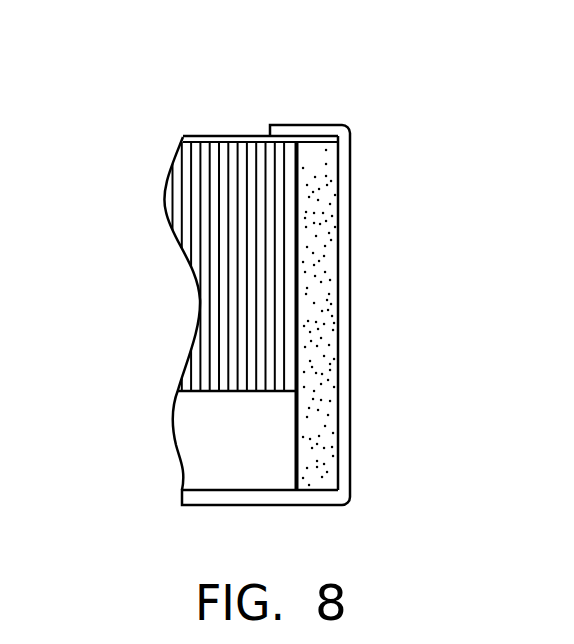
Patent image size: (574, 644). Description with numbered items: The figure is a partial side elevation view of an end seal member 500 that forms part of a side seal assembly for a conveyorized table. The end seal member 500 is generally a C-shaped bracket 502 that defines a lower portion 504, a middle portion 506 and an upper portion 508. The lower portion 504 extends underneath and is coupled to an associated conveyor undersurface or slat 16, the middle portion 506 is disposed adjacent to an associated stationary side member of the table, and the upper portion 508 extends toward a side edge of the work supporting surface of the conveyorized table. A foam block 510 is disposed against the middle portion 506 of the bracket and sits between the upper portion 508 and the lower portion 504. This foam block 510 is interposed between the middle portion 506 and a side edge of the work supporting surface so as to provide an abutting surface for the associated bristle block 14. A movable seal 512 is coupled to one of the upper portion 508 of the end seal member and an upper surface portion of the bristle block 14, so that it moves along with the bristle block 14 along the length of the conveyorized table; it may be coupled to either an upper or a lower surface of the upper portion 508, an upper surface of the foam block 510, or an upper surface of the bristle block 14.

The end seal member 500 is at (206, 109).
The C-shaped bracket 502 is at (386, 176).
The lower portion 504 is at (235, 505).
The middle portion 506 is at (350, 368).
The upper portion 508 is at (295, 124).
The foam block 510 is at (312, 250).
The movable seal 512 is at (197, 135).
The bristle block 14 is at (205, 180).
The slat 16 is at (208, 447).